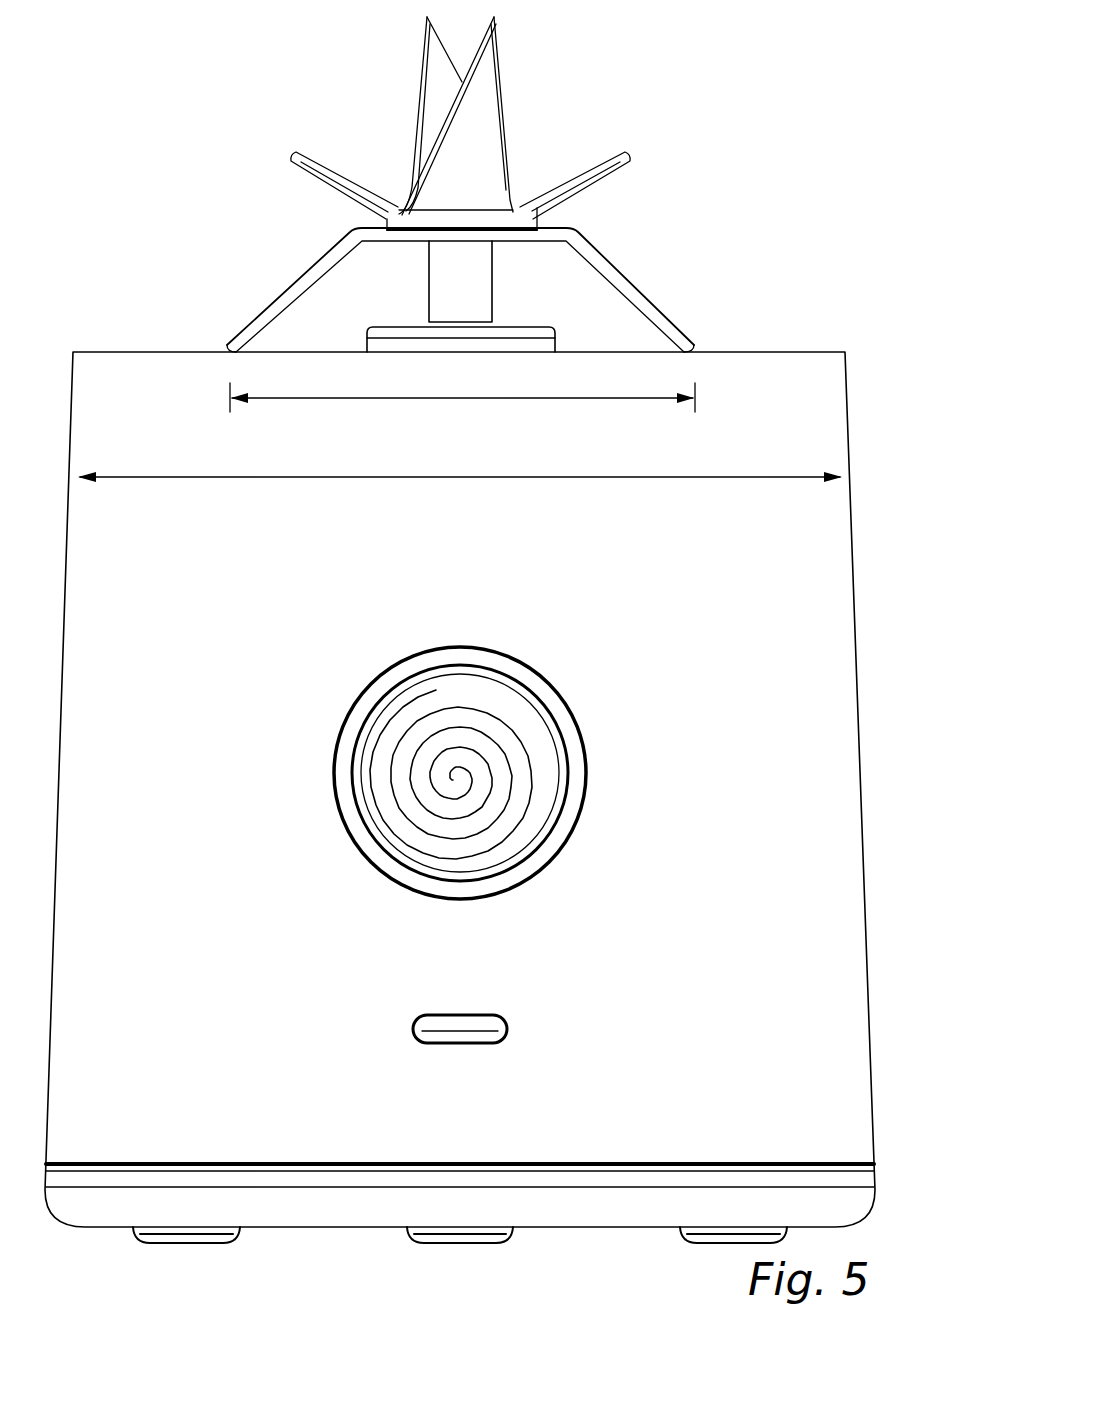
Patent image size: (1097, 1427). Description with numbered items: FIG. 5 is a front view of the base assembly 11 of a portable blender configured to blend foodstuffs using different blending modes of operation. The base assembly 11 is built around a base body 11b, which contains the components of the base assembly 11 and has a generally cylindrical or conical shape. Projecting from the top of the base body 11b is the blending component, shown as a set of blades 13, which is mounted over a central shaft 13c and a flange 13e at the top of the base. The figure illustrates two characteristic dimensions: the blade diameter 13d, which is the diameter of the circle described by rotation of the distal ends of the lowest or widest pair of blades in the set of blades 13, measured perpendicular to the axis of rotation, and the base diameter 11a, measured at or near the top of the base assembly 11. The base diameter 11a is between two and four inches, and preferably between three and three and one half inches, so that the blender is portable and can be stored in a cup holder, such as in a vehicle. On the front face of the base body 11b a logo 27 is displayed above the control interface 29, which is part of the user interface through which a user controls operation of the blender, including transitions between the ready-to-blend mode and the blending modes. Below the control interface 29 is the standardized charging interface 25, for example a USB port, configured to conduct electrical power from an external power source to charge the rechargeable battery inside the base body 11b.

The base assembly 11 is at (845, 82).
The base diameter 11a is at (546, 468).
The base body 11b is at (923, 333).
The set of blades 13 is at (795, 202).
The blade shaft 13c is at (479, 292).
The blade diameter 13d is at (557, 389).
The blade flange 13e is at (586, 330).
The charging interface 25 is at (670, 1079).
The logo 27 is at (671, 596).
The control interface 29 is at (721, 913).